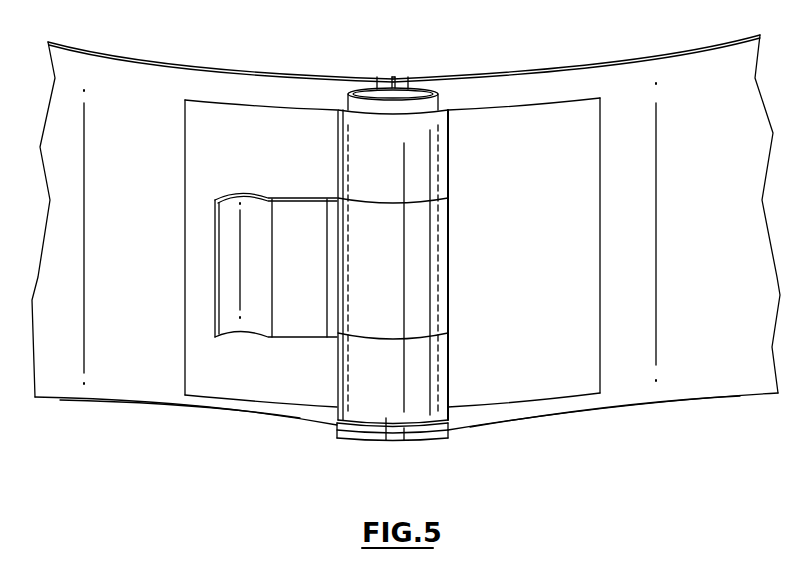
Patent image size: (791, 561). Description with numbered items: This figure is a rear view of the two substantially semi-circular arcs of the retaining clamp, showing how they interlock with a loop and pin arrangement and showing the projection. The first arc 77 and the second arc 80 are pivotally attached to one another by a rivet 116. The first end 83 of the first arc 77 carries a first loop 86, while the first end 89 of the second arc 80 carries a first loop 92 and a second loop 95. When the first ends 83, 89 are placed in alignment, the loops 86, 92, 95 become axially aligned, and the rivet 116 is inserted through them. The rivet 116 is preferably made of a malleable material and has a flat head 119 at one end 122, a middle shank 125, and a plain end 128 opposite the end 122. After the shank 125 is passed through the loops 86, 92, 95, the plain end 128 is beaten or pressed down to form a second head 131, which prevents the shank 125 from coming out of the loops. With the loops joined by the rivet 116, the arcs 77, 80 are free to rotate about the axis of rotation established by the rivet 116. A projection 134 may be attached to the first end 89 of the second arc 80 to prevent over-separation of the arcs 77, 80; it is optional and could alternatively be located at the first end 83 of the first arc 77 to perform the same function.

The first arc 77 is at (607, 62).
The second arc 80 is at (157, 63).
The first end of the first arc 83 is at (488, 436).
The first loop 86 is at (422, 288).
The first end of the second arc 89 is at (259, 431).
The first loop 92 is at (420, 163).
The second loop 95 is at (417, 380).
The rivet 116 is at (419, 79).
The flat head 119 is at (404, 440).
The end 122 is at (356, 443).
The middle shank 125 is at (387, 440).
The plain end 128 is at (337, 100).
The second head 131 is at (377, 77).
The projection 134 is at (235, 280).